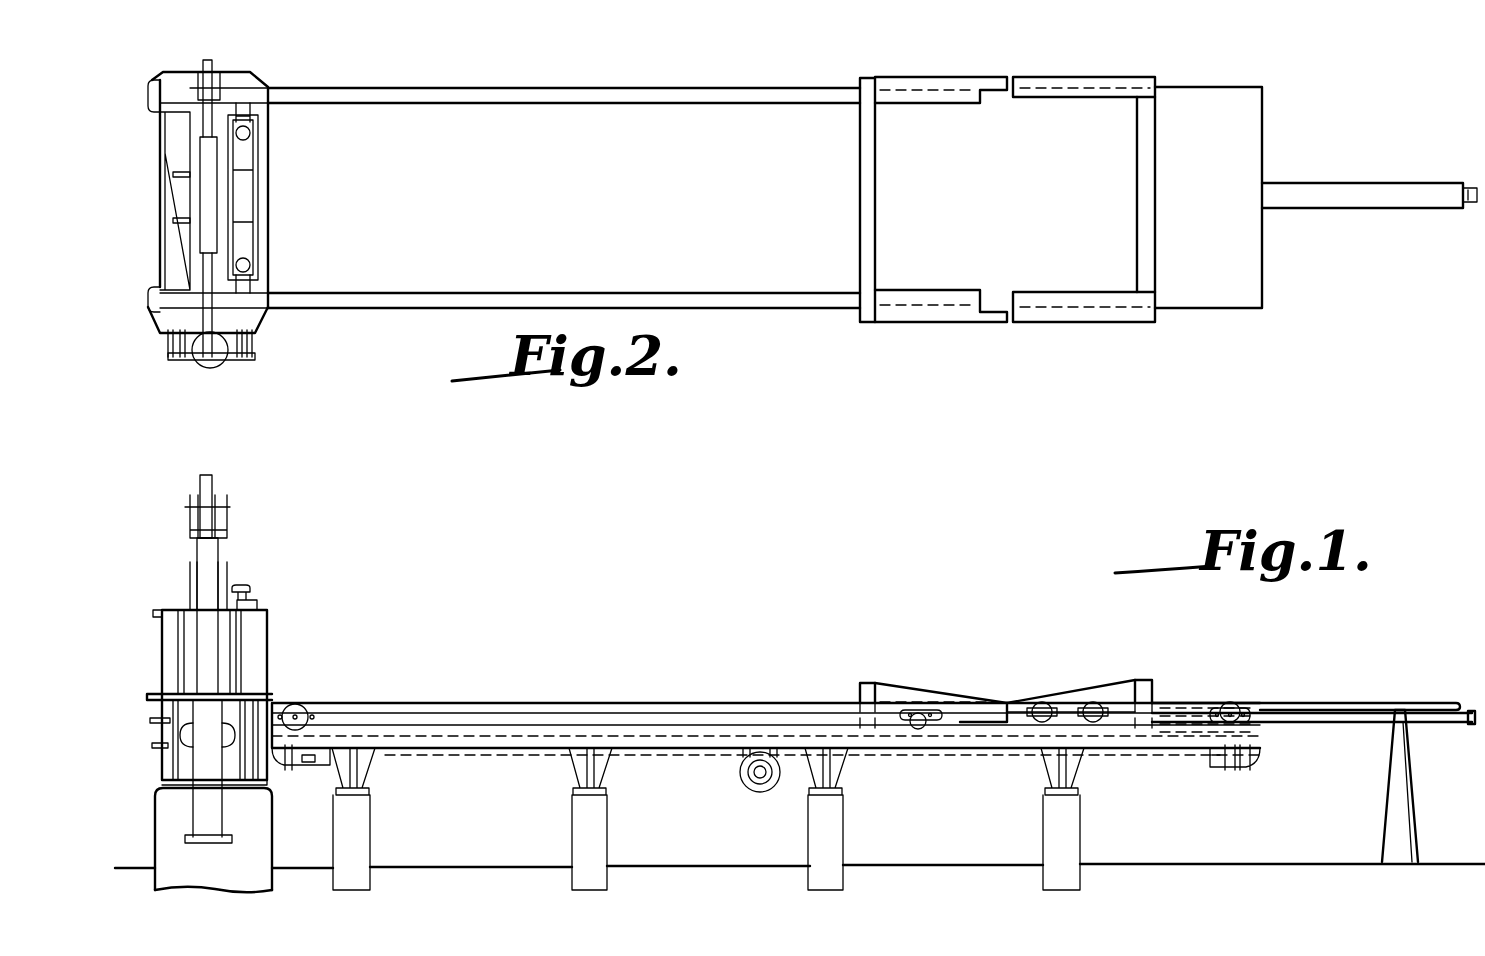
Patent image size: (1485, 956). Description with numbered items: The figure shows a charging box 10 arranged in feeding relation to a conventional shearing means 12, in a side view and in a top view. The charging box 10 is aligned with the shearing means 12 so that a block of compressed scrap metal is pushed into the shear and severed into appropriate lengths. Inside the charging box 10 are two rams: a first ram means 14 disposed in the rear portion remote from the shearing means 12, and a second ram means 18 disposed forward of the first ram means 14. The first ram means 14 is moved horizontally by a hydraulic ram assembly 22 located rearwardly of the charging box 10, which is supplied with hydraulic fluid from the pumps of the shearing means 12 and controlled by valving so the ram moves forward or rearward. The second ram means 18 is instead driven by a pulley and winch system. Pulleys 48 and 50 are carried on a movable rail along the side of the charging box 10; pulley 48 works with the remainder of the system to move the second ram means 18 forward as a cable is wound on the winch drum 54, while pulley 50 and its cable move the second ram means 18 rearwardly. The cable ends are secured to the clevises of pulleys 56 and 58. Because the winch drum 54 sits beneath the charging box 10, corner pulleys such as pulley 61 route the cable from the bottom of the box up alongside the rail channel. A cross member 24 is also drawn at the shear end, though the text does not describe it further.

In FIG. 2, the charging box 10 is at (574, 86).
In FIG. 1, the charging box 10 is at (514, 700).
In FIG. 2, the shearing means 12 is at (240, 68).
In FIG. 1, the shearing means 12 is at (270, 650).
In FIG. 2, the first ram means 14 is at (1157, 179).
In FIG. 1, the first ram means 14 is at (1152, 683).
In FIG. 2, the second ram means 18 is at (877, 187).
In FIG. 1, the second ram means 18 is at (872, 683).
In FIG. 2, the hydraulic ram assembly 22 is at (1305, 212).
In FIG. 1, the hydraulic ram assembly 22 is at (1368, 703).
In FIG. 1, the cross plate 24 is at (270, 695).
In FIG. 1, the pulley 48 is at (920, 708).
In FIG. 1, the pulley 50 is at (1043, 700).
In FIG. 1, the winch drum 54 is at (748, 786).
In FIG. 1, the pulley 56 is at (310, 712).
In FIG. 1, the pulley 58 is at (1095, 700).
In FIG. 1, the pulley 61 is at (1233, 703).